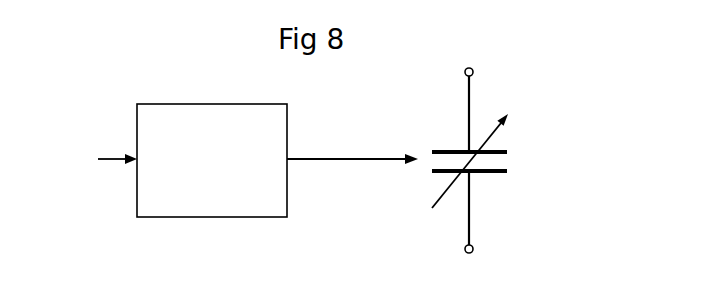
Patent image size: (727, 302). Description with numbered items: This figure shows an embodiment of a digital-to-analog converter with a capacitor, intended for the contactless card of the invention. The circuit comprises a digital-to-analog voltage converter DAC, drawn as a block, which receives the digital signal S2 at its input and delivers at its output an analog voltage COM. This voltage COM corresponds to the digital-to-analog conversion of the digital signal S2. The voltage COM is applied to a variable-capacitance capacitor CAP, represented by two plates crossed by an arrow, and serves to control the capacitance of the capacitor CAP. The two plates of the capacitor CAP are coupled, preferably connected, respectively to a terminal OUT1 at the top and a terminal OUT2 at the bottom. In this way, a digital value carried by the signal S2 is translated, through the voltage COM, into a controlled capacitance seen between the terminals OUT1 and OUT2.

The digital-to-analog voltage converter DAC is at (212, 160).
The digital signal S2 is at (112, 158).
The analog voltage COM is at (357, 158).
The variable-capacitance capacitor CAP is at (498, 148).
The terminal OUT1 is at (473, 72).
The terminal OUT2 is at (474, 249).